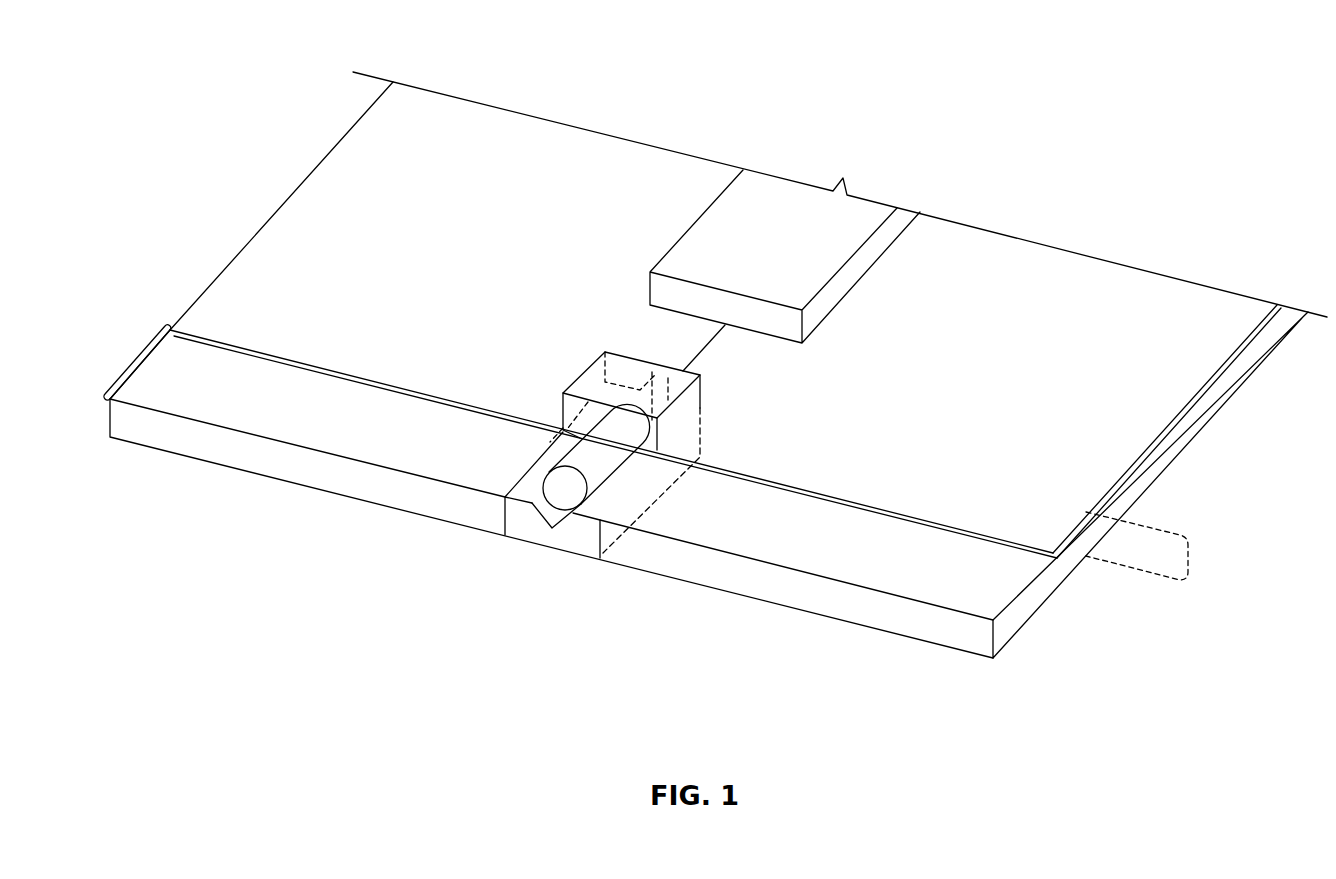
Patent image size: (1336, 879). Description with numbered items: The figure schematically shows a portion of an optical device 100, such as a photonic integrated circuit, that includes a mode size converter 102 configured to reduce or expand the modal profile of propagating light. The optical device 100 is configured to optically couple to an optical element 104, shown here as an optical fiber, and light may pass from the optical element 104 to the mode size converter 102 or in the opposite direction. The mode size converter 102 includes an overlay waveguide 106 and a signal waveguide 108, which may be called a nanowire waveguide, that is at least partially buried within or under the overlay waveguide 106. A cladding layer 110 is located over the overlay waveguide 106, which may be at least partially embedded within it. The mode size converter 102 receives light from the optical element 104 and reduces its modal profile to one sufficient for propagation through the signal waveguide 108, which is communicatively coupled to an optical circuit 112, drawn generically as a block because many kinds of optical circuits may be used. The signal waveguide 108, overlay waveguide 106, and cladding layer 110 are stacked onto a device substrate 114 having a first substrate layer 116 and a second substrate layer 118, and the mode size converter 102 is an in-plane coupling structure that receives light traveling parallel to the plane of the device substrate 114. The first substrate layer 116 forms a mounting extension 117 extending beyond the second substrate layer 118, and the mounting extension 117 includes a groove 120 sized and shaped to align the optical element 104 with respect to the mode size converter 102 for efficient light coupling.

The optical device 100 is at (1108, 82).
The mode size converter 102 is at (614, 365).
The optical element 104 is at (563, 393).
The overlay waveguide 106 is at (655, 397).
The signal waveguide 108 is at (707, 347).
The cladding layer 110 is at (582, 465).
The optical circuit 112 is at (765, 208).
The device substrate 114 is at (1190, 557).
The first substrate layer 116 is at (1183, 433).
The mounting extension 117 is at (133, 362).
The second substrate layer 118 is at (1190, 318).
The groove 120 is at (550, 513).